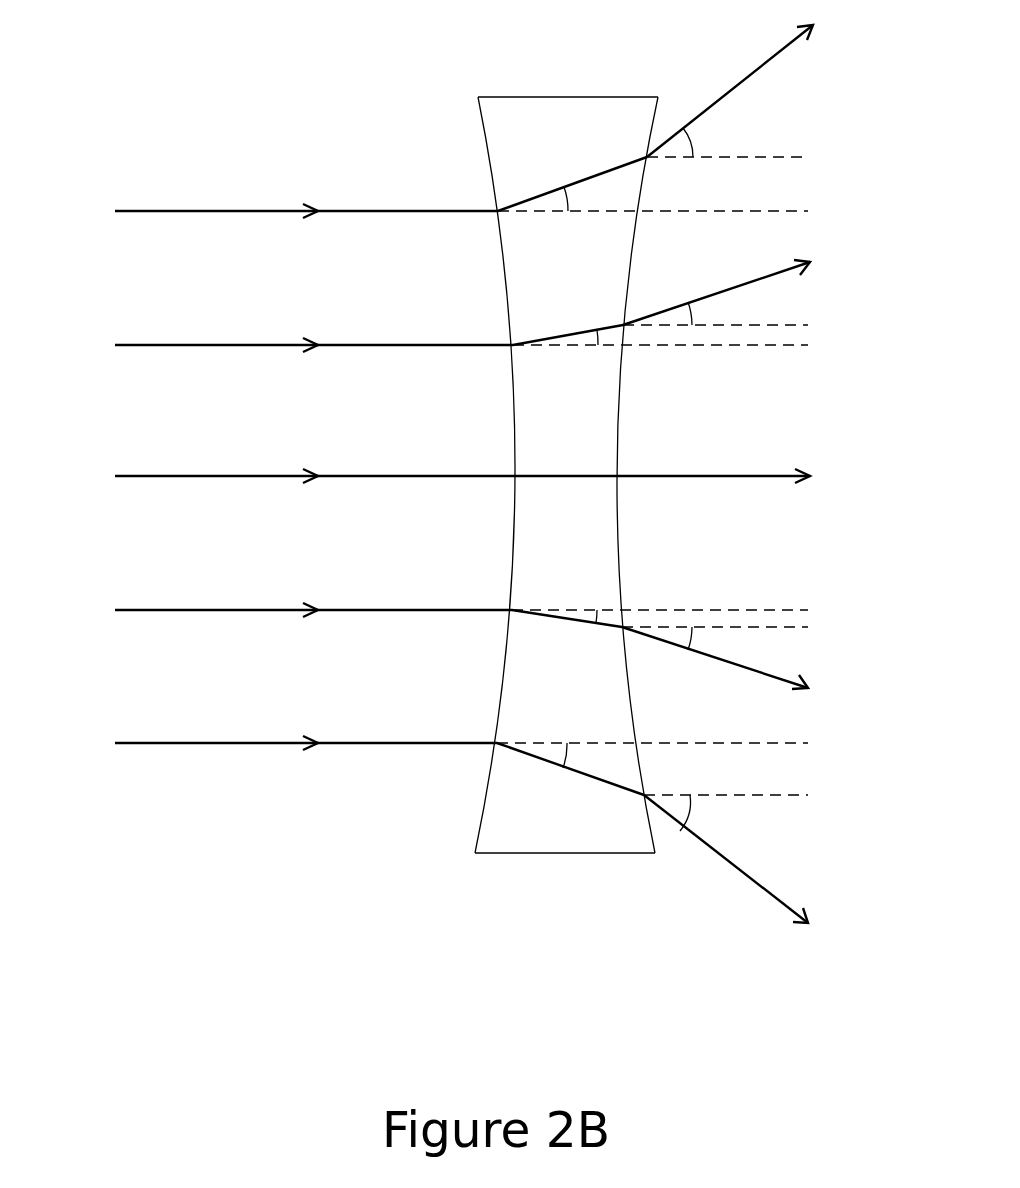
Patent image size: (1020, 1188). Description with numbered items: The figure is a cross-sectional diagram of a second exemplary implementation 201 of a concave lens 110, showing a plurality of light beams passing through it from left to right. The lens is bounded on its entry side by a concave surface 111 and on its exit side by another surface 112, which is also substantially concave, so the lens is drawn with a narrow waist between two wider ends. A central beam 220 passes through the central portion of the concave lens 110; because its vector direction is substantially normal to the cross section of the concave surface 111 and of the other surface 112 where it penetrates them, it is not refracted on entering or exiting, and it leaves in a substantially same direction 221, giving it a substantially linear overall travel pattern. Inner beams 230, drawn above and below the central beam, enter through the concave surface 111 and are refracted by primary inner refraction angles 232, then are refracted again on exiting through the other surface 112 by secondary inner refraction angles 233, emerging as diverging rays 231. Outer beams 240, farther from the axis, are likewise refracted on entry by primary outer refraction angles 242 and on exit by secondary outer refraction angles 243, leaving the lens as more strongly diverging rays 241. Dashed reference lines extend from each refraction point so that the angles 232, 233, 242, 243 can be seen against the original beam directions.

The concave lens 110 is at (571, 427).
The concave surface 111 is at (496, 170).
The another surface 112 is at (618, 415).
The second exemplary implementation 201 is at (240, 984).
The central beam 220 is at (436, 476).
The direction 221 is at (828, 474).
The inner beams 230 is at (435, 476).
The refracted output light ray 231 is at (741, 473).
The primary inner refraction angles 232 is at (597, 335).
The secondary inner refraction angles 233 is at (697, 313).
The outer beams 240 is at (435, 476).
The outer refracted output light ray 241 is at (752, 477).
The primary outer refraction angles 242 is at (567, 182).
The secondary outer refraction angles 243 is at (692, 144).